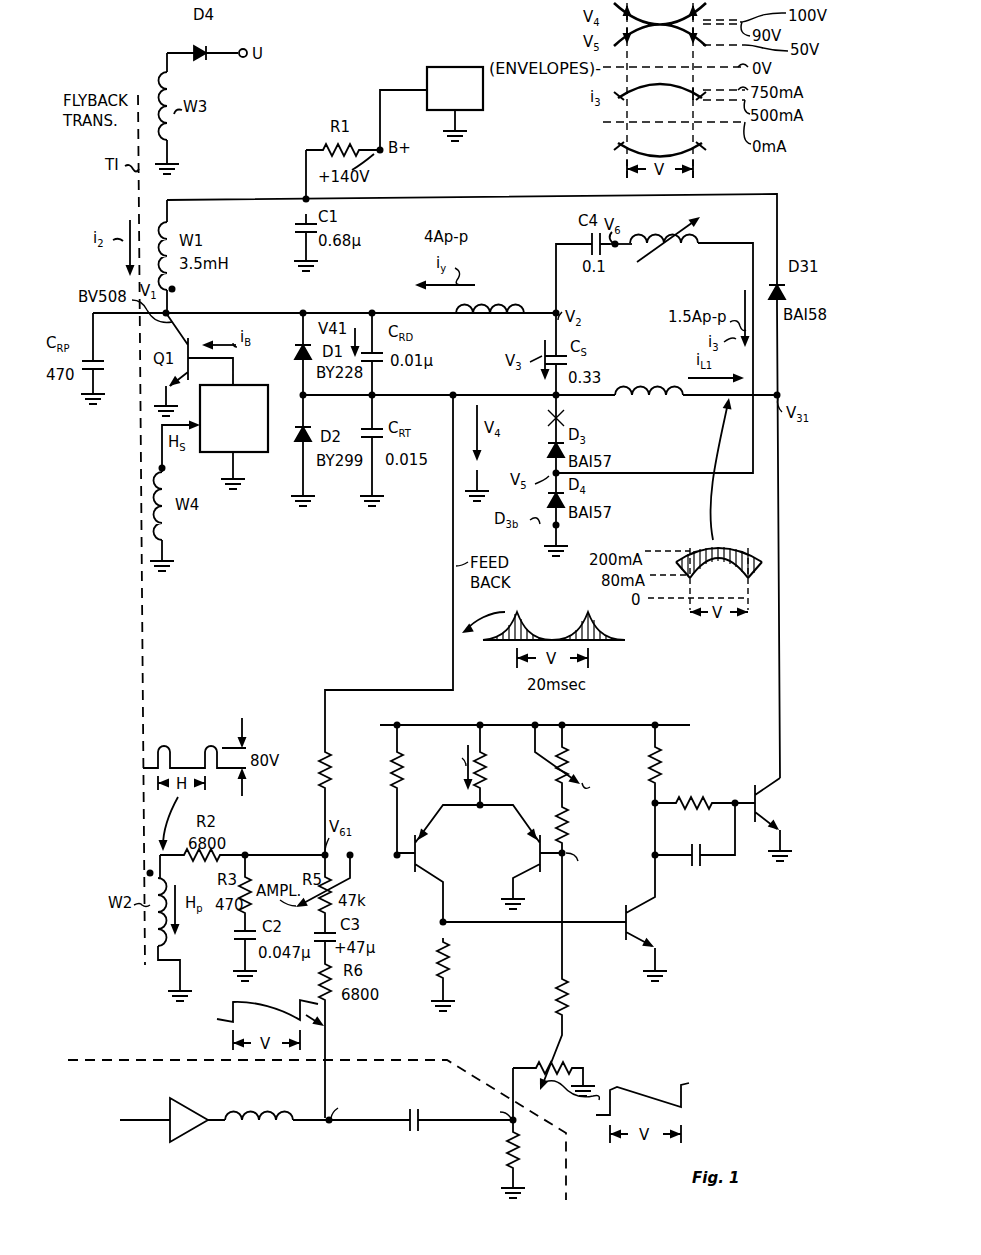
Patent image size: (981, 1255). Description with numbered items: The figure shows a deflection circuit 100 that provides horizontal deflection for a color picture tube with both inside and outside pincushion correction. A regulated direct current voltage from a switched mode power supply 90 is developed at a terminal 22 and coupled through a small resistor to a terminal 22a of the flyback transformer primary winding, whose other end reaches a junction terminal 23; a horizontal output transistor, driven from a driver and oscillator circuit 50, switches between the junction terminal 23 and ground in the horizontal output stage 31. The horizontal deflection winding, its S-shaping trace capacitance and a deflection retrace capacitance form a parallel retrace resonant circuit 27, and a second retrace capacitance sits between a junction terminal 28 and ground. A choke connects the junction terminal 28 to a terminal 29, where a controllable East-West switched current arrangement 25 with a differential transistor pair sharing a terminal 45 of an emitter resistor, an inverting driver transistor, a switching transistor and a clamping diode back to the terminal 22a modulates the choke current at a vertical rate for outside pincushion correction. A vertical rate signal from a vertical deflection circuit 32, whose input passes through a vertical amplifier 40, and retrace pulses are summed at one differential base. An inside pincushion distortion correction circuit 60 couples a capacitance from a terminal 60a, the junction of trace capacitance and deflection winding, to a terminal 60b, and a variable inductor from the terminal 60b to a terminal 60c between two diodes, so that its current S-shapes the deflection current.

The terminal 22 is at (380, 153).
The terminal of primary winding W1 22a is at (302, 198).
The junction terminal 23 is at (178, 291).
The controllable East-West switched current arrangement 25 is at (566, 898).
The parallel retrace resonant circuit 27 is at (490, 327).
The junction terminal 28 is at (554, 395).
The terminal of choke L1 29 is at (787, 379).
The horizontal output stage 31 is at (214, 247).
The vertical deflection circuit 32 is at (317, 1130).
The vertical amplifier 40 is at (188, 1110).
The terminal of resistor R9 45 is at (481, 809).
The driver and oscillator circuit 50 is at (262, 455).
The inside pincushion distortion correction circuit 60 is at (667, 373).
The terminal 60a is at (556, 288).
The terminal 60b is at (622, 258).
The terminal 60c is at (552, 472).
The switched mode power supply 90 is at (457, 67).
The deflection circuit 100 is at (398, 573).